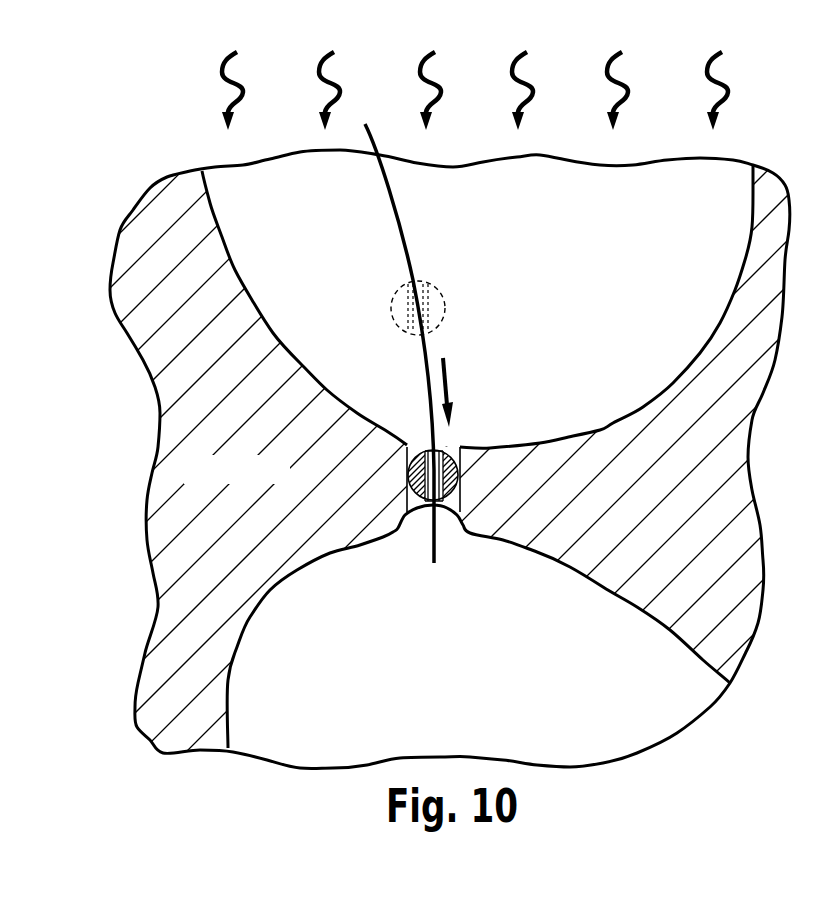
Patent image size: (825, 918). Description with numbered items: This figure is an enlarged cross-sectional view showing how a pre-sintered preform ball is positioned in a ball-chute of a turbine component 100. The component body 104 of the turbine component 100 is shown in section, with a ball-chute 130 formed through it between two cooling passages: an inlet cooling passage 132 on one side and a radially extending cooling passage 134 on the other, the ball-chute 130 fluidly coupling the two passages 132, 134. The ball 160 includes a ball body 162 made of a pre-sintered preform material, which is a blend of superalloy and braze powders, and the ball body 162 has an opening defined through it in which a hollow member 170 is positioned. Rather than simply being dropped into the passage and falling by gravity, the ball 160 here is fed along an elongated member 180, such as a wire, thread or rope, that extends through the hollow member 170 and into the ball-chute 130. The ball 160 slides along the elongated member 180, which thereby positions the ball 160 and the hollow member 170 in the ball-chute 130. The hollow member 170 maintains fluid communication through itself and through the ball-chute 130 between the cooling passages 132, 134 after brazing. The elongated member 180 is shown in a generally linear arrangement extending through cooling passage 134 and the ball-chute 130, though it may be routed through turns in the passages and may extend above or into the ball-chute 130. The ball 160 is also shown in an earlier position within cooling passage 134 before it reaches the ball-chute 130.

The turbine component 100 is at (412, 467).
The component body 104 is at (286, 481).
The ball-chute 130 is at (462, 501).
The cooling passage 132 is at (458, 661).
The cooling passage 134 is at (473, 240).
The ball 160 is at (395, 300).
The ball body 162 is at (406, 449).
The hollow member 170 is at (462, 452).
The elongated member 180 is at (375, 133).